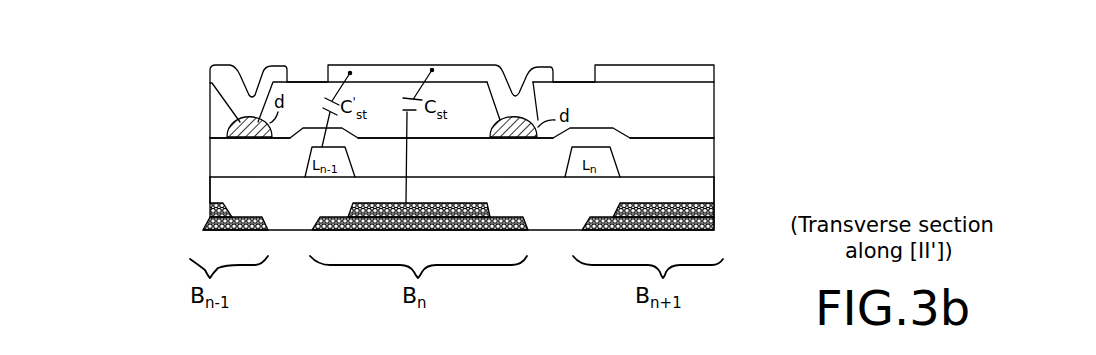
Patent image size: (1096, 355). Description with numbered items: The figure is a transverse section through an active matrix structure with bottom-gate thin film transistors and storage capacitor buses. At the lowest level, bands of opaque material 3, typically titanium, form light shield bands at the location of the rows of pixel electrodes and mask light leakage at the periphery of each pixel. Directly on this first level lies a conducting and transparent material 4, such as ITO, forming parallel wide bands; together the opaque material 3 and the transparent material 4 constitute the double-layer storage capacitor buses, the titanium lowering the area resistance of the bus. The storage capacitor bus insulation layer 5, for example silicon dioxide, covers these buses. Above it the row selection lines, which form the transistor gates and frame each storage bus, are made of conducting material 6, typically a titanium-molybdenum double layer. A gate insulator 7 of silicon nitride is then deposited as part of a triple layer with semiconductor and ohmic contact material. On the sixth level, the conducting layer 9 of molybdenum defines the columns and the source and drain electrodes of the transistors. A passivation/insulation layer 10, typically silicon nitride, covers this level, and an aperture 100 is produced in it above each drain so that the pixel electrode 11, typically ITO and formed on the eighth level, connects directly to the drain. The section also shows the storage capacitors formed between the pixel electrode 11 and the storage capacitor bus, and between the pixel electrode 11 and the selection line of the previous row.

The opaque material 3 is at (203, 222).
The conducting and transparent material 4 is at (697, 217).
The storage capacitor bus insulation layer 5 is at (233, 187).
The conducting material 6 is at (455, 155).
The gate insulator 7 is at (696, 162).
The conducting layer 9 is at (500, 118).
The passivation/insulation layer 10 is at (695, 117).
The pixel electrode 11 is at (478, 65).
The aperture 100 is at (533, 104).